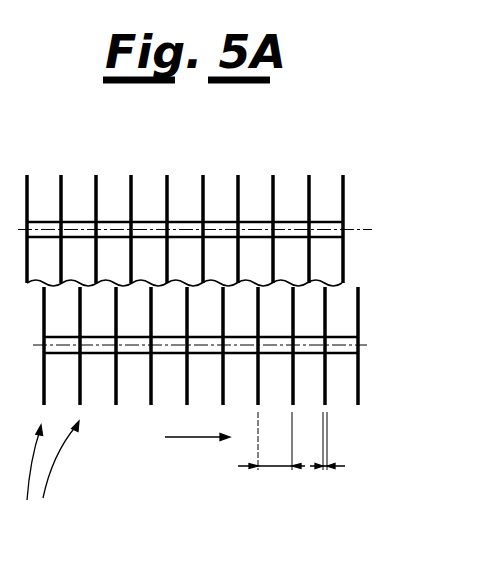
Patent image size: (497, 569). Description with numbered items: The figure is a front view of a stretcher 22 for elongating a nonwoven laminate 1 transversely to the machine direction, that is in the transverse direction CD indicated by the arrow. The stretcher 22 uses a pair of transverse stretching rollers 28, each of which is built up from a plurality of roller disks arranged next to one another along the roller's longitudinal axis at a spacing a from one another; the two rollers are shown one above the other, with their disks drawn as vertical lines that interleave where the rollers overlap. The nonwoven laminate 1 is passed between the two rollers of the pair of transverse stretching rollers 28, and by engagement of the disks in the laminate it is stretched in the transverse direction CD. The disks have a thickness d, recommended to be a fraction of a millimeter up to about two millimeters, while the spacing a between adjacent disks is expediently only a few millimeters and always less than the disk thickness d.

The nonwoven laminate 1 is at (252, 305).
The stretcher 22 is at (252, 191).
The pair of transverse stretching rollers 28 is at (48, 480).
The transverse direction CD is at (195, 438).
The spacing a is at (276, 467).
The thickness d is at (328, 468).